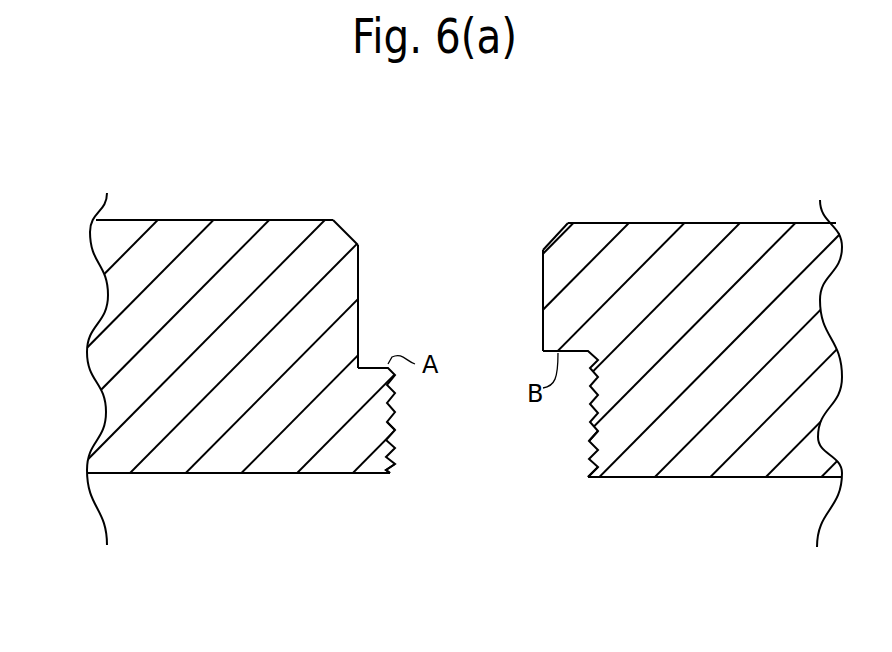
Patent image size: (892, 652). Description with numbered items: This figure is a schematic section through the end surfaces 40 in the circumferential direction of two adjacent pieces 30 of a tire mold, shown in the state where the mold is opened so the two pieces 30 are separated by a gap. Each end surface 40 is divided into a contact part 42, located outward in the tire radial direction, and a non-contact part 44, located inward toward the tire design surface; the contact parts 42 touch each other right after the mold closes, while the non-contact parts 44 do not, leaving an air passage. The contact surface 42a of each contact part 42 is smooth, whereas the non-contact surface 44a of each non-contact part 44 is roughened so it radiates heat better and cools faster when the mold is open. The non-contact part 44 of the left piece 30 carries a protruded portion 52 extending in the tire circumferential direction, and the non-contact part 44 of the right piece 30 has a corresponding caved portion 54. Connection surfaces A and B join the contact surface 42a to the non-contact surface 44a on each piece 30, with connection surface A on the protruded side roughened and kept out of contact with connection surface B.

The piece 30 is at (187, 458).
The end surface in the circumferential direction 40 is at (513, 355).
The contact part 42 is at (345, 240).
The contact surface 42a is at (362, 291).
The non-contact part 44 is at (372, 476).
The non-contact surface 44a is at (394, 430).
The protruded portion 52 is at (389, 485).
The caved portion 54 is at (596, 483).